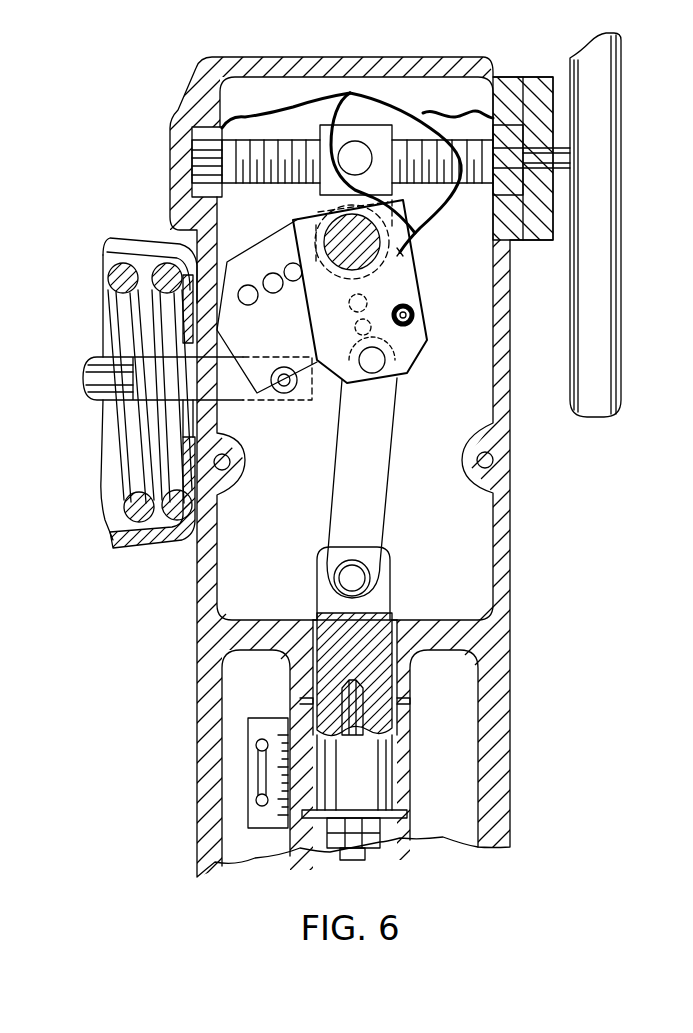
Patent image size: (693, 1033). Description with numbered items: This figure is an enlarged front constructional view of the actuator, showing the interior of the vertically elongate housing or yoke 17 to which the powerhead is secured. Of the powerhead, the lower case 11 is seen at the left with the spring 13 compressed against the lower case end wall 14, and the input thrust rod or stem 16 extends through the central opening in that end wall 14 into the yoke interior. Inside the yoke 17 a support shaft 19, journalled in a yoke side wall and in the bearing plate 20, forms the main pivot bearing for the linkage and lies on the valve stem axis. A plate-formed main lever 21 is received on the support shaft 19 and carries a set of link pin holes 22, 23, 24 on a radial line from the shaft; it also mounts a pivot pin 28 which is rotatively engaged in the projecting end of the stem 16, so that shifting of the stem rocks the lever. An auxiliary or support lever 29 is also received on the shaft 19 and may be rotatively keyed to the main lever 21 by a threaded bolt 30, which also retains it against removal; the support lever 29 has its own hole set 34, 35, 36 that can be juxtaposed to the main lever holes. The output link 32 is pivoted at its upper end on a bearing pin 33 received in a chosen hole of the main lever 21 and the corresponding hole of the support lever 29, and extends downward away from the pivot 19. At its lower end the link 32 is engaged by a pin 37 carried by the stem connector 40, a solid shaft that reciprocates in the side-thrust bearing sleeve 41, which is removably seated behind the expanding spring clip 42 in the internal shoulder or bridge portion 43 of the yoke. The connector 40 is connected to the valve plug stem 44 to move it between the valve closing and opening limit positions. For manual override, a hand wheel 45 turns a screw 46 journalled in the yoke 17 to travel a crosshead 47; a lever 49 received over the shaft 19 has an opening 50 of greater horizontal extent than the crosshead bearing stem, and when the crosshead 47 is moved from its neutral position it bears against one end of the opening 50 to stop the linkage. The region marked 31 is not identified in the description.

The lower case 11 is at (137, 242).
The spring 13 is at (123, 518).
The lower case end wall 14 is at (188, 323).
The input thrust rod or stem 16 is at (177, 391).
The housing or yoke 17 is at (222, 63).
The support shaft 19 is at (402, 252).
The bearing plate 20 is at (250, 93).
The main lever 21 is at (265, 240).
The link pin hole 22 is at (296, 266).
The link pin hole 23 is at (269, 277).
The link pin hole 24 is at (247, 305).
The pivot pin 28 is at (280, 395).
The auxiliary or support lever 29 is at (410, 340).
The threaded bolt 30 is at (418, 315).
The housing base 31 is at (306, 758).
The link 32 is at (335, 500).
The bearing pin 33 is at (380, 365).
The hole 34 is at (348, 302).
The hole 35 is at (353, 327).
The hole 36 is at (360, 362).
The pin 37 is at (358, 578).
The stem connector 40 is at (393, 772).
The side-thrust bearing sleeve 41 is at (313, 650).
The expanding spring clip 42 is at (407, 708).
The internal shoulder or bridge portion 43 is at (445, 625).
The valve plug stem 44 is at (357, 862).
The hand wheel 45 is at (622, 263).
The screw 46 is at (317, 143).
The crosshead 47 is at (353, 130).
The lever 49 is at (423, 110).
The opening 50 is at (430, 197).